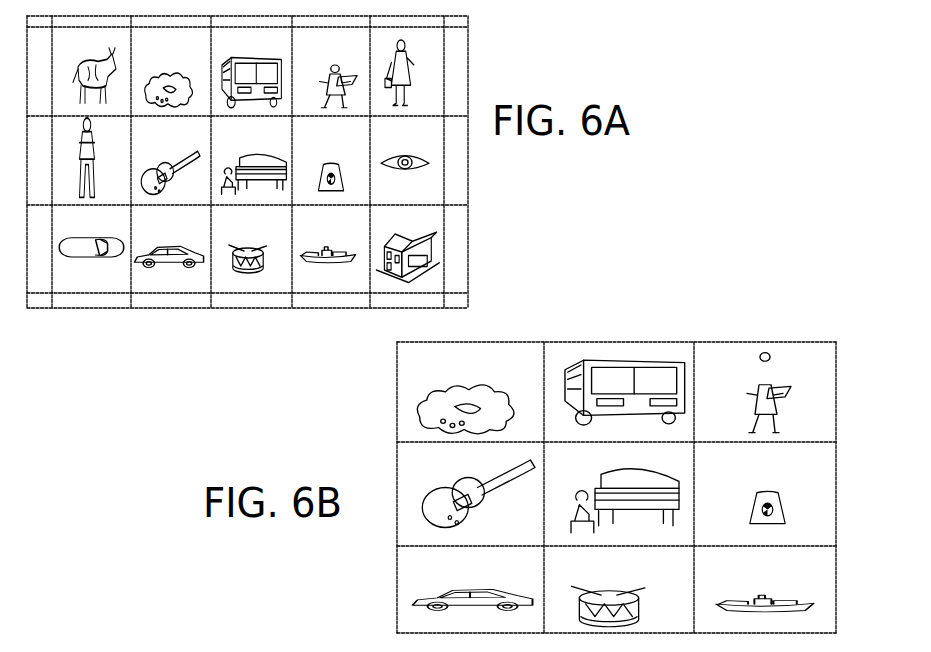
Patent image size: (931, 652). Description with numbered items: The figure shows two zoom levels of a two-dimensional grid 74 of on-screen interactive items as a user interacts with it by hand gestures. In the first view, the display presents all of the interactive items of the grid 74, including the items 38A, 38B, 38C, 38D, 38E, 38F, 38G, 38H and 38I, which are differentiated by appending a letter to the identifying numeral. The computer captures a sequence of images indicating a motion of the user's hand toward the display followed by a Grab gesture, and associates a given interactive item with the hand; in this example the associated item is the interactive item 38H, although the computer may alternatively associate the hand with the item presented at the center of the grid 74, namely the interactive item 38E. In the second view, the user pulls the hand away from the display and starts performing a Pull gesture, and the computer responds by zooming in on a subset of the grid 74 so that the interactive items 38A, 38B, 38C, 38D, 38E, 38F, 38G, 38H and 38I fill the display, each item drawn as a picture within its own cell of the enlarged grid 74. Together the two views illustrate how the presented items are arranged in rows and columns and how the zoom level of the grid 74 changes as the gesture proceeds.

In FIG. 6A, the grid 74 is at (507, 72).
In FIG. 6B, the grid 74 is at (692, 315).
In FIG. 6A, the interactive item 38A is at (190, 64).
In FIG. 6B, the interactive item 38A is at (485, 379).
In FIG. 6A, the interactive item 38B is at (273, 64).
In FIG. 6B, the interactive item 38B is at (635, 378).
In FIG. 6A, the interactive item 38C is at (353, 64).
In FIG. 6B, the interactive item 38C is at (789, 378).
In FIG. 6A, the interactive item 38D is at (190, 154).
In FIG. 6B, the interactive item 38D is at (485, 483).
In FIG. 6A, the interactive item 38E is at (275, 154).
In FIG. 6B, the interactive item 38E is at (638, 483).
In FIG. 6A, the interactive item 38F is at (355, 154).
In FIG. 6B, the interactive item 38F is at (790, 484).
In FIG. 6A, the interactive item 38G is at (190, 244).
In FIG. 6B, the interactive item 38G is at (485, 583).
In FIG. 6A, the interactive item 38H is at (271, 244).
In FIG. 6B, the interactive item 38H is at (637, 583).
In FIG. 6A, the interactive item 38I is at (350, 244).
In FIG. 6B, the interactive item 38I is at (785, 586).